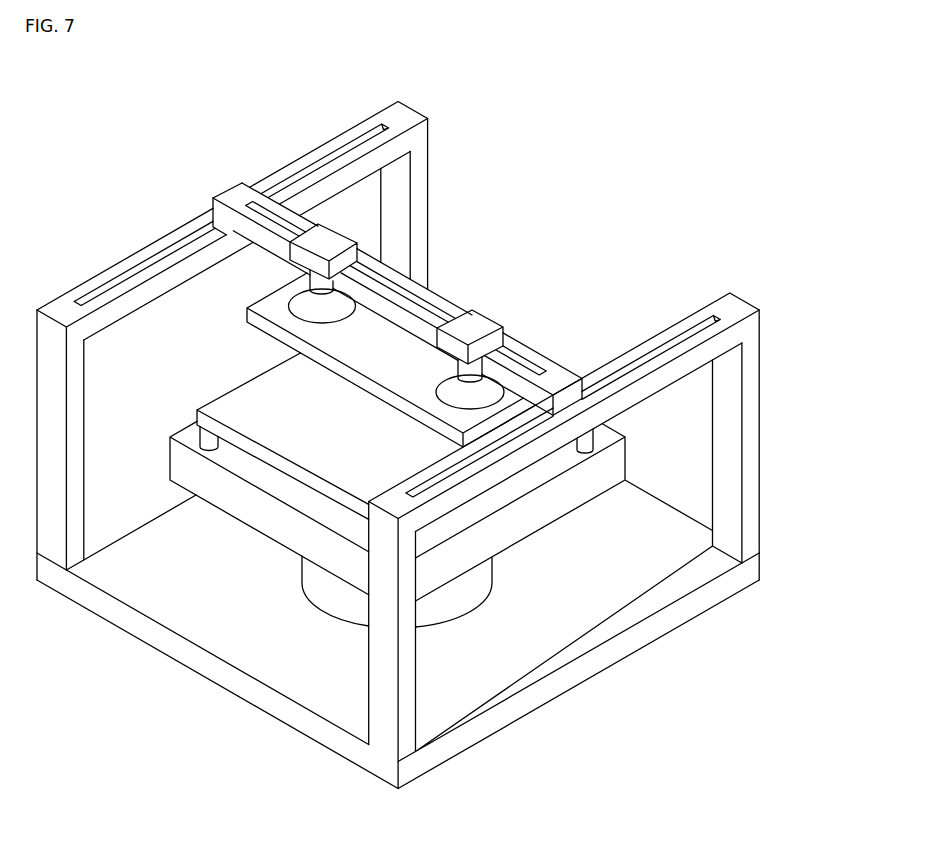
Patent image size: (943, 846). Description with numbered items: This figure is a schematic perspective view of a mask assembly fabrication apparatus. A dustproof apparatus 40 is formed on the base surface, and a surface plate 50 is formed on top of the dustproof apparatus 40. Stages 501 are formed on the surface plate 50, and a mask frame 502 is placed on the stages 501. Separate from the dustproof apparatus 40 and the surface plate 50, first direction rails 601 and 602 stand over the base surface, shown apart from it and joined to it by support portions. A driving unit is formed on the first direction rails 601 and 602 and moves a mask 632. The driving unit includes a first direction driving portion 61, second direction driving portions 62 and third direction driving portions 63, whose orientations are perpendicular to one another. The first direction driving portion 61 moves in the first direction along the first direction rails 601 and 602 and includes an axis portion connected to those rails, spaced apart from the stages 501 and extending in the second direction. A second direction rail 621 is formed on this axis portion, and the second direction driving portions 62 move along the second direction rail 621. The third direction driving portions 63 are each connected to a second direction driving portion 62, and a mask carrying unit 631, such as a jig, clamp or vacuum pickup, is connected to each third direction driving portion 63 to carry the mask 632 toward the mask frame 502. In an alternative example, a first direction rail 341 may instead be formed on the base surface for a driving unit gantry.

The dustproof apparatus 40 is at (460, 595).
The surface plate 50 is at (527, 517).
The stage 501 is at (207, 442).
The mask frame 502 is at (323, 448).
The first direction driving portion 61 is at (414, 299).
The second direction driving portion 62 is at (481, 326).
The second direction rail 621 is at (519, 356).
The third direction driving portion 63 is at (307, 275).
The mask carrying unit 631 is at (307, 306).
The mask 632 is at (360, 354).
The first direction rail 341 is at (670, 346).
The first direction rail 601 is at (600, 531).
The first direction rail 602 is at (417, 171).